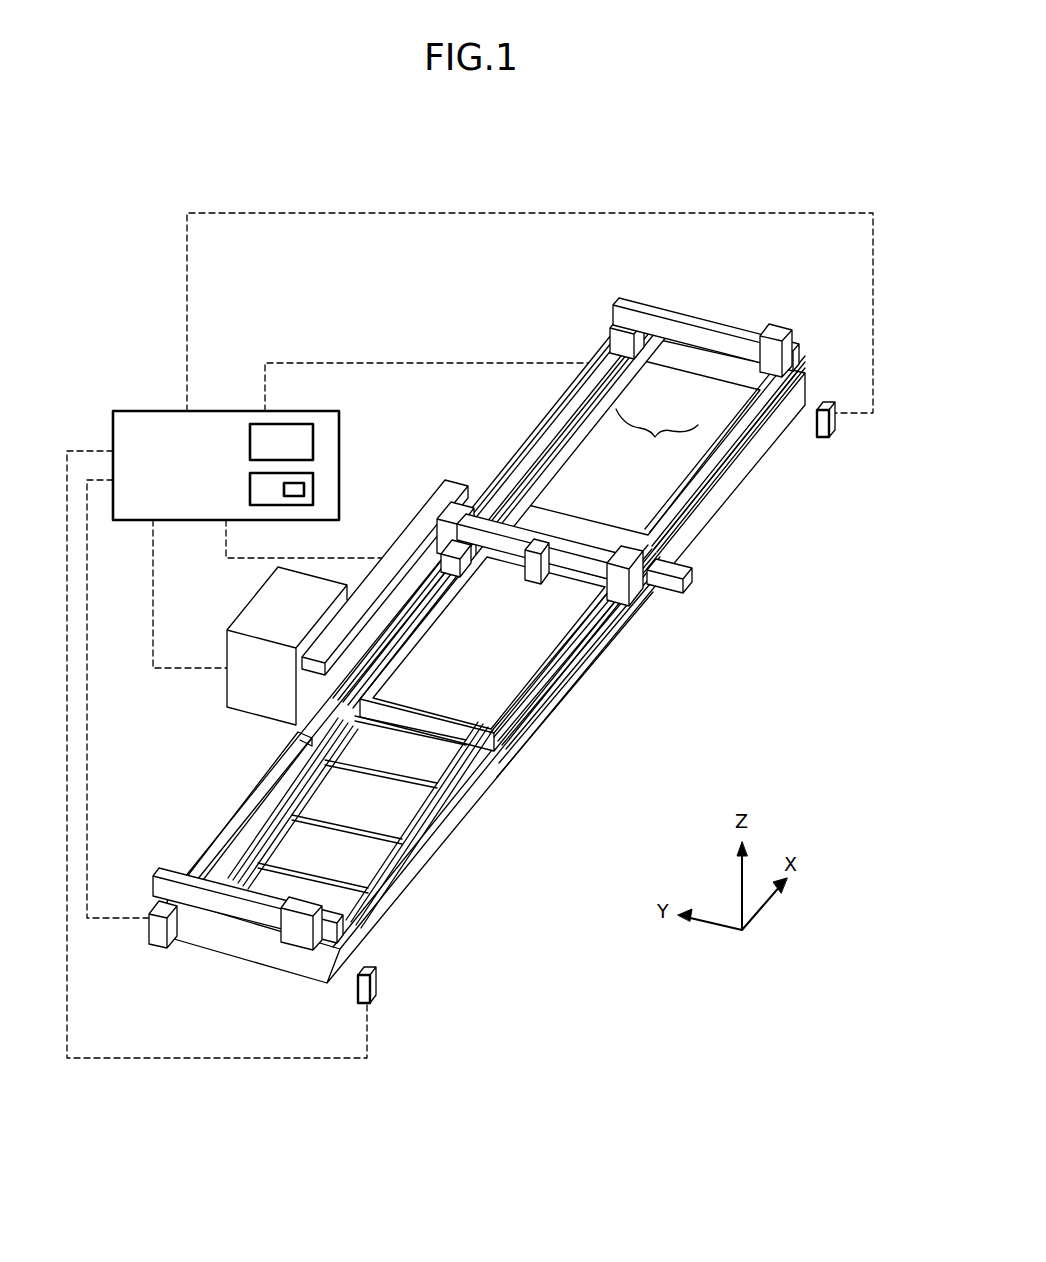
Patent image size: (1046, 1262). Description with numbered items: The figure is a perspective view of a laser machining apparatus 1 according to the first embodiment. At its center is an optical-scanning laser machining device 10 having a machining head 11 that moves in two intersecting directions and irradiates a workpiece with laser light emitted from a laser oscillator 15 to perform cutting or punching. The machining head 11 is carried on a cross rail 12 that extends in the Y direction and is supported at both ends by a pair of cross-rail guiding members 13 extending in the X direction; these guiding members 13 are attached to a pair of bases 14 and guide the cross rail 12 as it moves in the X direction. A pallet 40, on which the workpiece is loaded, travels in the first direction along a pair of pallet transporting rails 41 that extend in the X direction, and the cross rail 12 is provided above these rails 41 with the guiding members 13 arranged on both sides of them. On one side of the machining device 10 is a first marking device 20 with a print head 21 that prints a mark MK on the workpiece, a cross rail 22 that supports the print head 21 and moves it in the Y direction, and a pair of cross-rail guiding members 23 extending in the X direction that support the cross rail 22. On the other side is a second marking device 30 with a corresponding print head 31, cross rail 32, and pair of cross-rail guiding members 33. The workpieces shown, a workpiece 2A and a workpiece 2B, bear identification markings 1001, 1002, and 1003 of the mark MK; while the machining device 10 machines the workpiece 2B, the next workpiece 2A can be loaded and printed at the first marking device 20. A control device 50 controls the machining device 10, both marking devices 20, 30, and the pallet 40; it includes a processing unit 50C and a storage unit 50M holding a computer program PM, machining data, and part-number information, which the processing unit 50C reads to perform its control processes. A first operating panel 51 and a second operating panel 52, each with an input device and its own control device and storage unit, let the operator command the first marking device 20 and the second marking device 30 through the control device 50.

The laser machining apparatus 1 is at (212, 178).
The workpiece 2A is at (502, 660).
The workpiece 2B is at (620, 487).
The optical-scanning laser machining device 10 is at (412, 508).
The machining head 11 is at (530, 547).
The cross rail 12 is at (477, 527).
The cross-rail guiding members 13 is at (340, 688).
The bases 14 is at (310, 717).
The laser oscillator 15 is at (247, 622).
The first marking device 20 is at (220, 810).
The print head 21 is at (305, 928).
The cross rail 22 is at (170, 873).
The cross-rail guiding members 23 is at (280, 787).
The second marking device 30 is at (538, 335).
The print head 31 is at (770, 337).
The cross rail 32 is at (696, 330).
The cross-rail guiding members 33 is at (553, 447).
The pallet 40 is at (457, 727).
The pallet transporting rails 41 is at (327, 747).
The control device 50 is at (140, 411).
The processing unit 50C is at (300, 424).
The storage unit 50M is at (265, 505).
The computer program PM is at (298, 496).
The first operating panel 51 is at (373, 985).
The second operating panel 52 is at (833, 420).
The mark MK is at (709, 435).
The identification mark 1001 is at (636, 387).
The identification mark 1002 is at (668, 402).
The identification mark 1003 is at (697, 417).